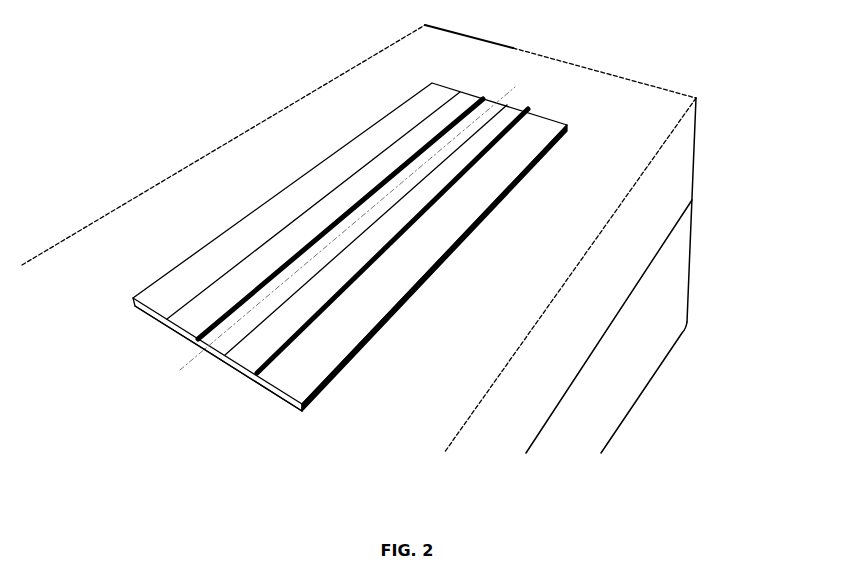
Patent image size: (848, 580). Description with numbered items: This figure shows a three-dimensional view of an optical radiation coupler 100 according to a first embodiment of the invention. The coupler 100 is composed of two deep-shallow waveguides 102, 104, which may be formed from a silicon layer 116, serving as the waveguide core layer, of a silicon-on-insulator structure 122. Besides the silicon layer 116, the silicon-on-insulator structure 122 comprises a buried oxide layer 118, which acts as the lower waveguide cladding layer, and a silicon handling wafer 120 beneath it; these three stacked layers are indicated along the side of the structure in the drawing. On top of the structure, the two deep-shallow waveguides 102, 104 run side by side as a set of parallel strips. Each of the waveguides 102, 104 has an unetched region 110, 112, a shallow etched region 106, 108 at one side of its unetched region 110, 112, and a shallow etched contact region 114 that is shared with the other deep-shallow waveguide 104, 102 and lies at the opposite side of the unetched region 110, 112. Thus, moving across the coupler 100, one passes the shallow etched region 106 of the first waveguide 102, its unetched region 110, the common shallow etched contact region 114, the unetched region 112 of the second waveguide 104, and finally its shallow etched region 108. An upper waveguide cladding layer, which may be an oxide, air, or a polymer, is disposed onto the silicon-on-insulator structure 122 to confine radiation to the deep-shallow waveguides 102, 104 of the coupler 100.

The optical radiation coupler 100 is at (557, 108).
The deep-shallow waveguide 102 is at (118, 303).
The deep-shallow waveguide 104 is at (199, 353).
The shallow etched region 106 is at (248, 233).
The shallow etched region 108 is at (345, 323).
The unetched region 110 is at (345, 200).
The unetched region 112 is at (392, 221).
The shallow etched contact region 114 is at (425, 167).
The silicon layer 116 is at (707, 57).
The buried oxide layer 118 is at (707, 100).
The silicon handling wafer 120 is at (707, 209).
The silicon-on-insulator structure 122 is at (760, 50).